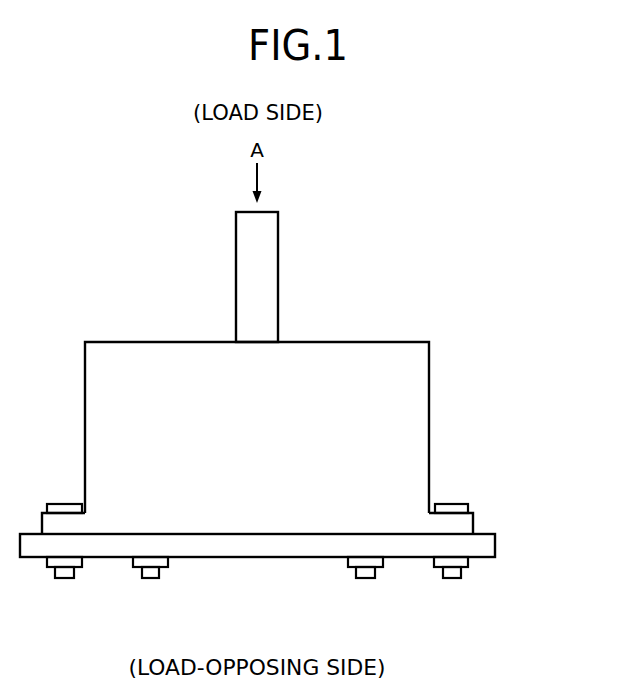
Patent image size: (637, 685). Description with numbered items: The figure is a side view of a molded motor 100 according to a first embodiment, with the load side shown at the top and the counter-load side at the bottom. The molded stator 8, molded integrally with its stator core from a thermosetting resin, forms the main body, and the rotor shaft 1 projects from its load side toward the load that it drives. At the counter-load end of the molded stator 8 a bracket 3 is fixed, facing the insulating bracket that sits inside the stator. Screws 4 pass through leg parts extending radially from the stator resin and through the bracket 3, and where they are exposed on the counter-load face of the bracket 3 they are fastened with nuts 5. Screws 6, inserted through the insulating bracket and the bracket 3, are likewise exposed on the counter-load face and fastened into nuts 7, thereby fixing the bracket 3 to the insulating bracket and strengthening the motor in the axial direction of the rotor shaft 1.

The molded motor 100 is at (401, 303).
The rotor shaft 1 is at (278, 266).
The molded stator 8 is at (429, 397).
The screws 4 is at (453, 503).
The bracket 3 is at (490, 542).
The nuts 7 is at (383, 563).
The screws 6 is at (364, 578).
The nuts 5 is at (468, 563).